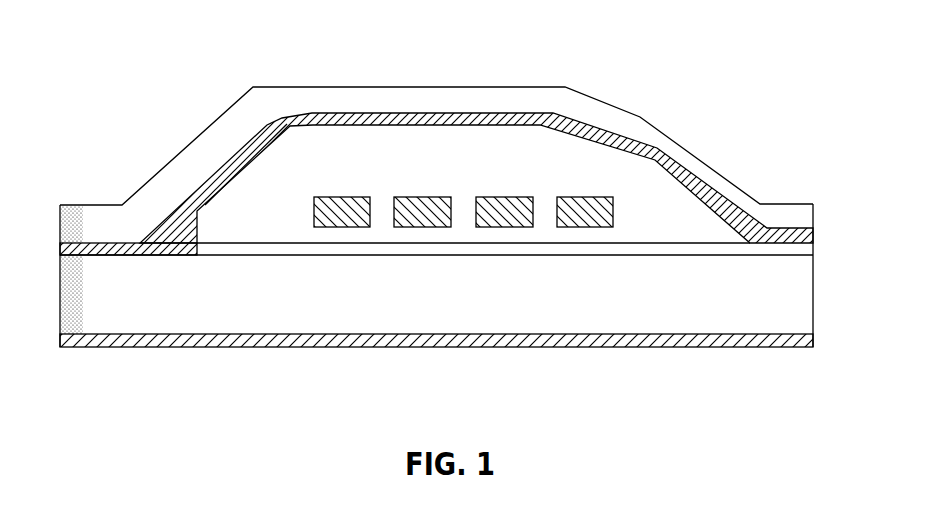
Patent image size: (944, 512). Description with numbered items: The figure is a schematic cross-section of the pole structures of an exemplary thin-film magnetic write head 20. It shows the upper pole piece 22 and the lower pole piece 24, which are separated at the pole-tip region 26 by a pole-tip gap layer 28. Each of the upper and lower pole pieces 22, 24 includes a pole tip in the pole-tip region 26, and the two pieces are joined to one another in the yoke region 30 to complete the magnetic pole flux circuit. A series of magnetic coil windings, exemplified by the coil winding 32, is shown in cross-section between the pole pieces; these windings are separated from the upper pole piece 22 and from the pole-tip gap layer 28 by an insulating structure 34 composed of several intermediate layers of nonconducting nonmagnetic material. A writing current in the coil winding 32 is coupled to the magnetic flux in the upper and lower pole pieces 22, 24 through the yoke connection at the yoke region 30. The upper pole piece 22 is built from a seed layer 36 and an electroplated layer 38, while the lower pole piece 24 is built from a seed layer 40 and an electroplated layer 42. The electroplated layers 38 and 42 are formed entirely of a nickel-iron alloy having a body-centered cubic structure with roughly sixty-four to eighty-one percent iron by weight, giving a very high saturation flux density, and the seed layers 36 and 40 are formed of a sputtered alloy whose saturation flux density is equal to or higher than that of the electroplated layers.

The thin-film magnetic head 20 is at (766, 125).
The upper pole piece 22 is at (822, 204).
The lower pole piece 24 is at (822, 255).
The pole-tip region 26 is at (813, 199).
The pole-tip gap layer 28 is at (812, 248).
The yoke region 30 is at (156, 167).
The coil winding 32 is at (340, 196).
The insulating structure 34 is at (412, 171).
The seed layer 36 is at (345, 116).
The electroplated layer 38 is at (412, 94).
The seed layer 40 is at (203, 346).
The electroplated layer 42 is at (282, 320).